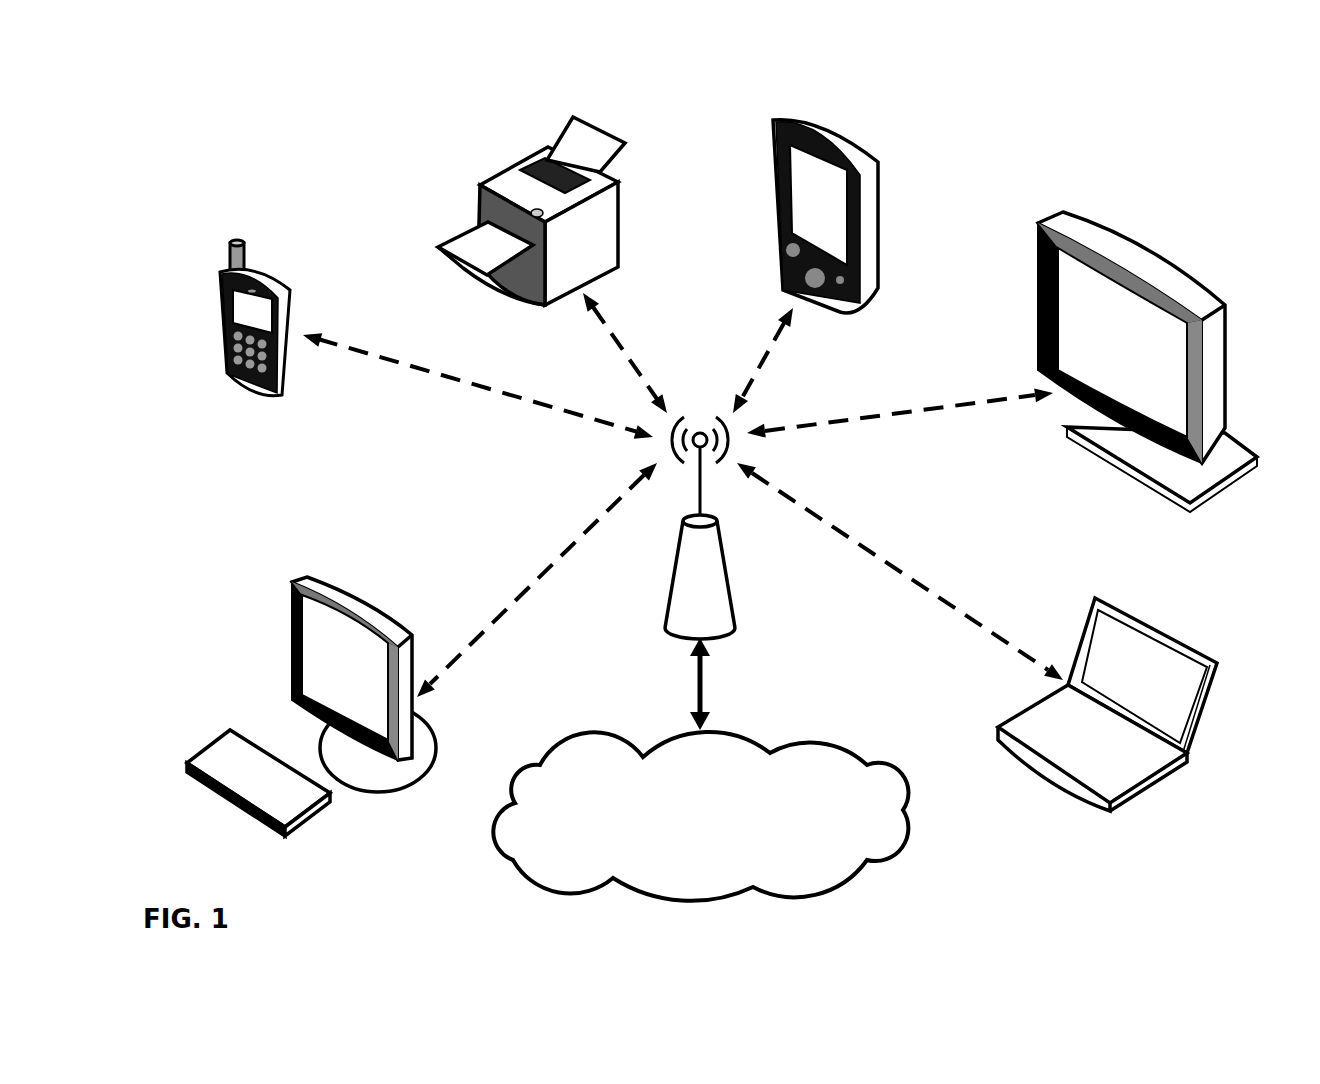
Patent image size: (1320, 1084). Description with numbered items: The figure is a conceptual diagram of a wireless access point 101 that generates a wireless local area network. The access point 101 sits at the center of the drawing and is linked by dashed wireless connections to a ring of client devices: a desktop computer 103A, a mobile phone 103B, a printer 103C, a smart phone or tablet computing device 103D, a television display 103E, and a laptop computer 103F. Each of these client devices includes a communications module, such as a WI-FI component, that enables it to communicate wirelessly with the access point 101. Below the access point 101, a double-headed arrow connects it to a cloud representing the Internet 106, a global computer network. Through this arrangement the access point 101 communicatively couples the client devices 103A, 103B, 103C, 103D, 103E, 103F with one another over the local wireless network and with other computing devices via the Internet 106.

The wireless access point 101 is at (720, 533).
The Internet 106 is at (724, 847).
The desktop computer 103A is at (303, 573).
The mobile phone 103B is at (270, 273).
The printer 103C is at (620, 188).
The smart phone or tablet computing device 103D is at (863, 140).
The television display 103E is at (1123, 237).
The laptop computer 103F is at (1117, 600).